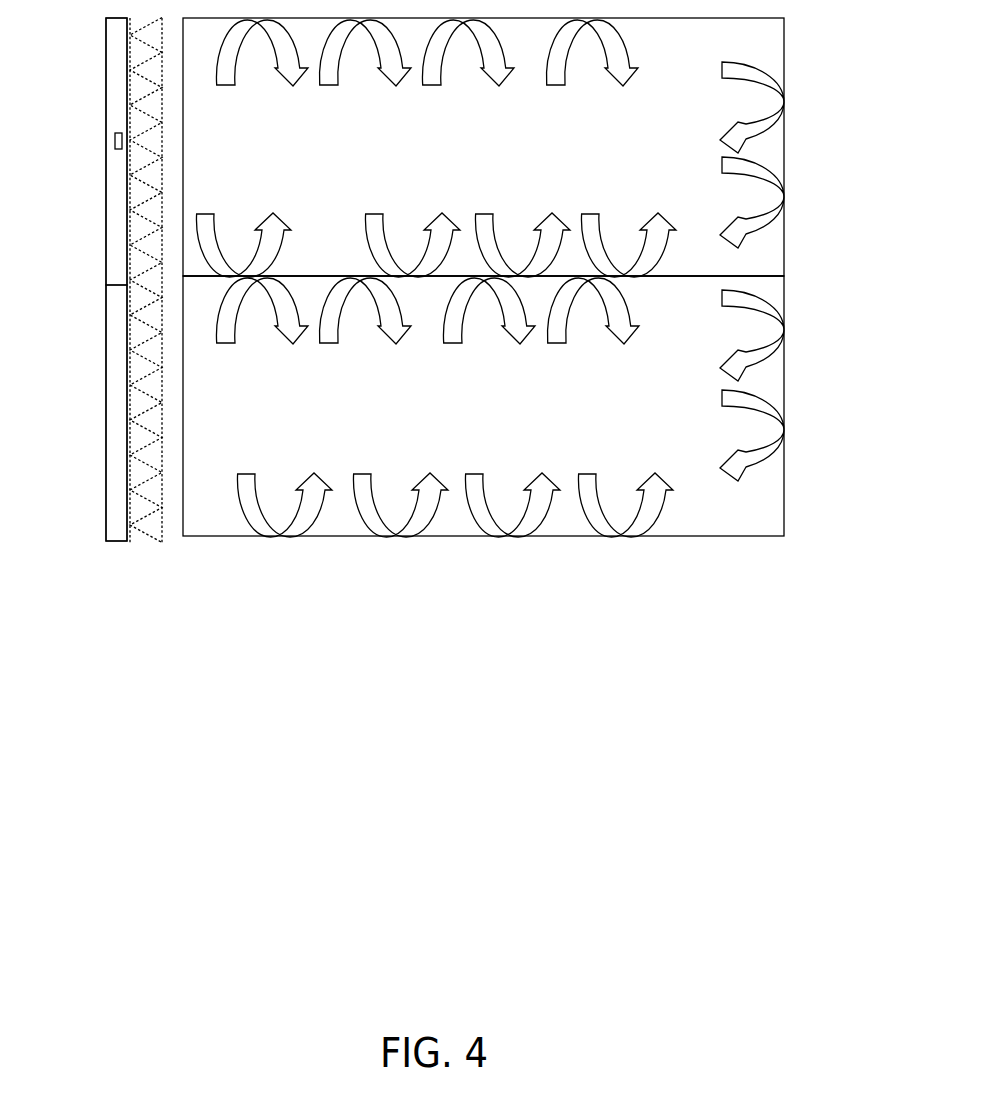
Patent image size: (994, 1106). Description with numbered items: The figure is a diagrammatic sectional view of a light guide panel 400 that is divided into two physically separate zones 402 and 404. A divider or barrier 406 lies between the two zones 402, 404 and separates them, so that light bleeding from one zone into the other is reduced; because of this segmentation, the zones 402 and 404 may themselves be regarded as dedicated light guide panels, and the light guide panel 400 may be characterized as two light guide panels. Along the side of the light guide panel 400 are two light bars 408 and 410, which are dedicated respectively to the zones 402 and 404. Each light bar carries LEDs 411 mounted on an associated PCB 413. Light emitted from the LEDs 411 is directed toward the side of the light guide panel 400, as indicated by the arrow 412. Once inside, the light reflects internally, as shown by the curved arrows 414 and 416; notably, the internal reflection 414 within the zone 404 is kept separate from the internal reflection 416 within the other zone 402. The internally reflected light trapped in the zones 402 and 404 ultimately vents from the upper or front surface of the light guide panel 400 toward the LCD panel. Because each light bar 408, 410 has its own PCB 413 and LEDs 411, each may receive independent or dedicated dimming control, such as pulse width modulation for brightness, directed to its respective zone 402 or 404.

The light guide panel 400 is at (452, 1018).
The first LGP zone 402 is at (767, 150).
The second LGP zone 404 is at (767, 380).
The divider or barrier 406 is at (743, 270).
The first light bar 408 is at (106, 216).
The second light bar 410 is at (106, 458).
The LEDs 411 is at (115, 141).
The light directed toward side of LGP 412 is at (144, 557).
The PCB 413 is at (116, 72).
The internal reflection arrows of second zone 414 is at (565, 322).
The internal reflection arrows of first zone 416 is at (564, 68).